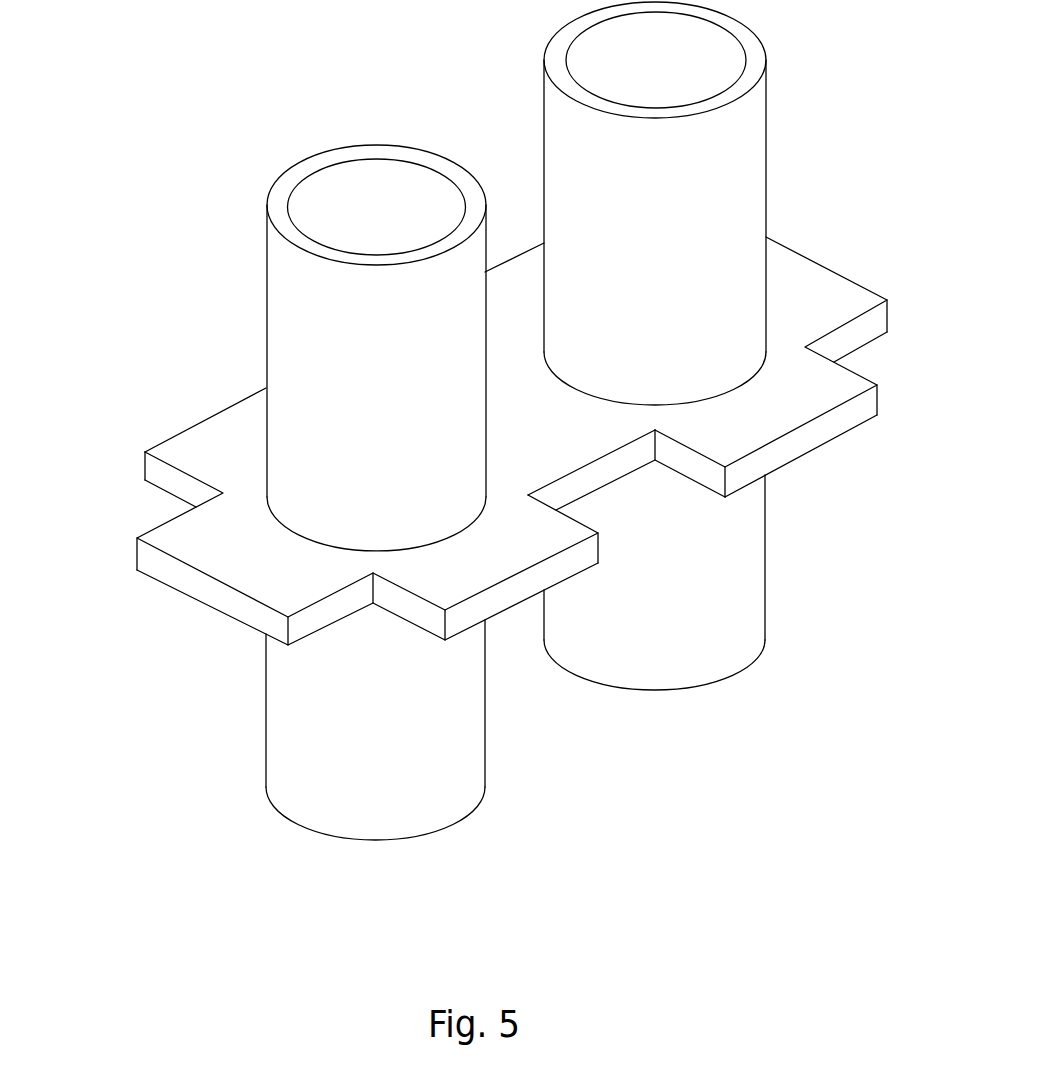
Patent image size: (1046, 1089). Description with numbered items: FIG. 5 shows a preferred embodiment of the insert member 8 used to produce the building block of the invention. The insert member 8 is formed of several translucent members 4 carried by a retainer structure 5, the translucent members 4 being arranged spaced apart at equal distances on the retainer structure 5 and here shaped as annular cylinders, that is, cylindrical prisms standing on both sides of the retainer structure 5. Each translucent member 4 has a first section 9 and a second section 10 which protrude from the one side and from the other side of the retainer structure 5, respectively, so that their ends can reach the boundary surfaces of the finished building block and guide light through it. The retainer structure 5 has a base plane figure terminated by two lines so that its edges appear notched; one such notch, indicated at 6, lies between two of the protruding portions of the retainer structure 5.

The translucent member 4 is at (424, 278).
The retainer structure 5 is at (210, 440).
The recess 6 is at (632, 488).
The insert member 8 is at (477, 431).
The first section 9 is at (765, 185).
The second section 10 is at (765, 547).